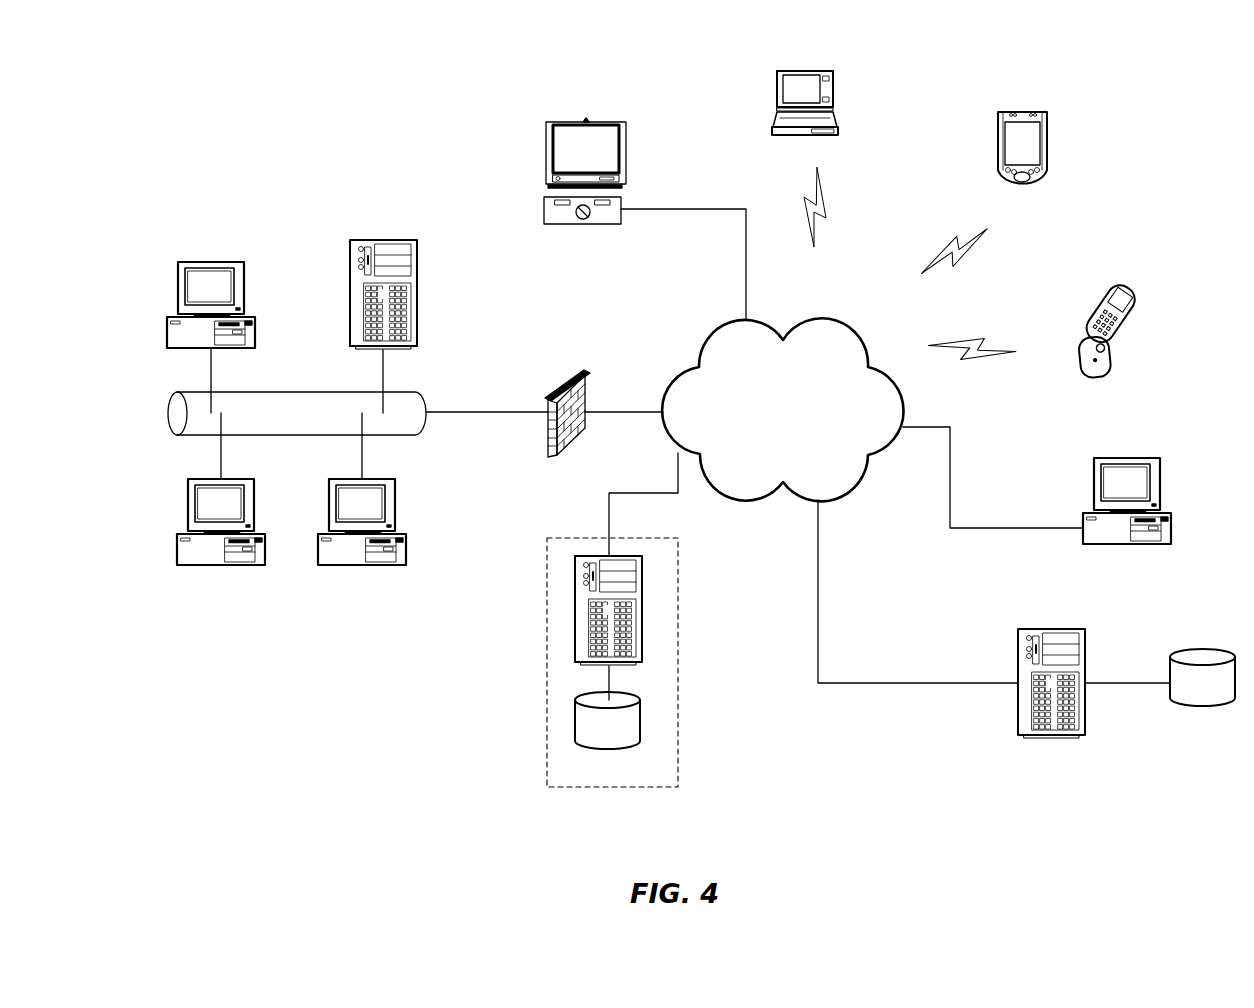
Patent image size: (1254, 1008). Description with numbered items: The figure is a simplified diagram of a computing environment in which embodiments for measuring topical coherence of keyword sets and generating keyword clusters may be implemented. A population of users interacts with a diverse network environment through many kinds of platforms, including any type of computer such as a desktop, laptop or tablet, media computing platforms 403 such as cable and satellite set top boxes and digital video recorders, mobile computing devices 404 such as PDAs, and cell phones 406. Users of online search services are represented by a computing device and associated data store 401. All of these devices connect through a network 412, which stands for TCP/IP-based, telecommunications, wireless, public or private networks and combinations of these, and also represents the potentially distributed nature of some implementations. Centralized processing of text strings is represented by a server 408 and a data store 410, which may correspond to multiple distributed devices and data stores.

The computing device and associated data store 401 is at (678, 695).
The media computing platform 403 is at (544, 210).
The mobile computing device 404 is at (996, 122).
The cell phone 406 is at (1110, 298).
The server 408 is at (1032, 630).
The data store 410 is at (1200, 648).
The network 412 is at (710, 338).